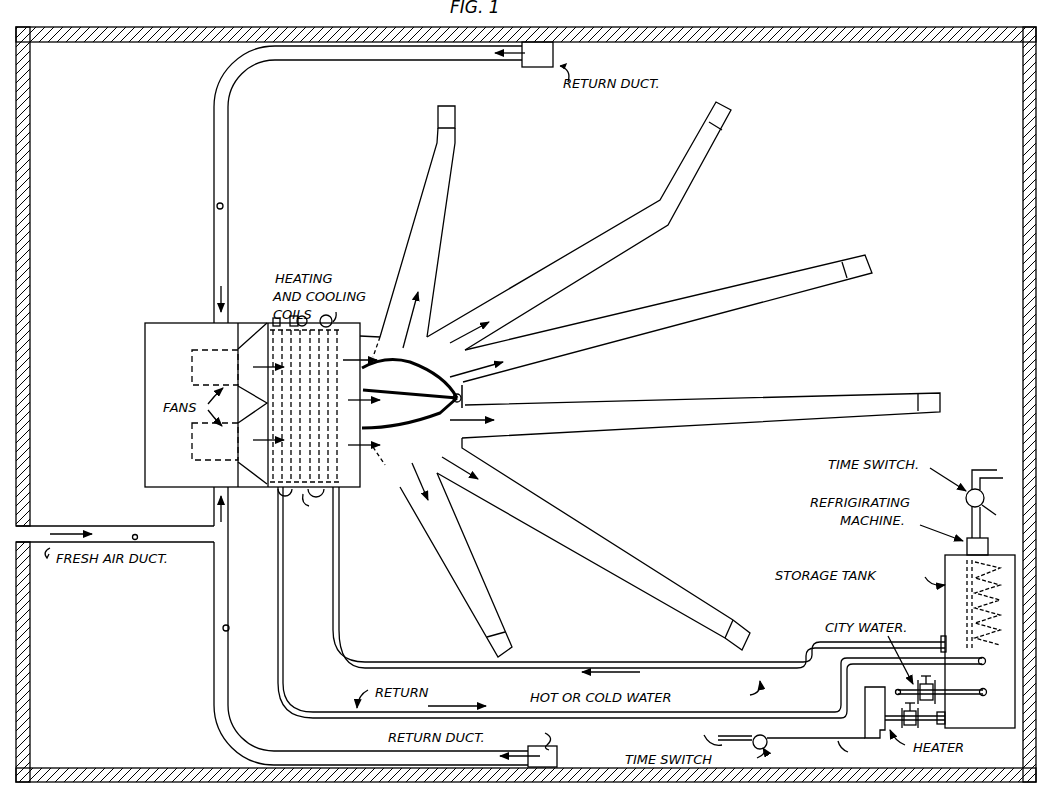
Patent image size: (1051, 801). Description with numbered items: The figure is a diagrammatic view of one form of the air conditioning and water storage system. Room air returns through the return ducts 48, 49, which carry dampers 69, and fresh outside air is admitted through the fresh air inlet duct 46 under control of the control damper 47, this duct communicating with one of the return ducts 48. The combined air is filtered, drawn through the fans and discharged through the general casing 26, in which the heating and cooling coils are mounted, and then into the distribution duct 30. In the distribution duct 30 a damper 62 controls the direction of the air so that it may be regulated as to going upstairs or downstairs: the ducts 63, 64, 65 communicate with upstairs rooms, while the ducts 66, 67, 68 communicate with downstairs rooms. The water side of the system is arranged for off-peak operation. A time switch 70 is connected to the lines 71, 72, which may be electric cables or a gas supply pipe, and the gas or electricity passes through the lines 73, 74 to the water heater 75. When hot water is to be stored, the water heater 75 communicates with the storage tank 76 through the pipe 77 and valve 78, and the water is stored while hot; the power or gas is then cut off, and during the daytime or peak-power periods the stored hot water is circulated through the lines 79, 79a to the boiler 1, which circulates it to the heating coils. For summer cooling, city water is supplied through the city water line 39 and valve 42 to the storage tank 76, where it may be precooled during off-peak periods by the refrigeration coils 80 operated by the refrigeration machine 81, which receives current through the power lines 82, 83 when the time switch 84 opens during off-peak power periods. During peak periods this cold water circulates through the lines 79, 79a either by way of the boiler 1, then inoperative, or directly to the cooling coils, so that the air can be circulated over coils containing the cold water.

The boiler 1 is at (311, 507).
The casing 26 is at (353, 413).
The distribution duct 30 is at (380, 470).
The city water main 39 is at (905, 689).
The valve 42 is at (937, 691).
The fresh air inlet duct 46 is at (100, 526).
The control damper 47 is at (136, 535).
The return duct 48 is at (218, 593).
The return duct 49 is at (214, 246).
The damper 62 is at (400, 391).
The duct 63 is at (477, 590).
The duct 64 is at (575, 528).
The duct 65 is at (657, 407).
The duct 66 is at (655, 312).
The duct 67 is at (565, 258).
The duct 68 is at (418, 223).
The dampers 69 is at (218, 205).
The time switch 70 is at (753, 735).
The line 71 is at (738, 735).
The line 72 is at (702, 734).
The line 73 is at (847, 753).
The line 74 is at (810, 737).
The water heater 75 is at (866, 721).
The storage tank 76 is at (1008, 728).
The pipe 77 is at (938, 718).
The valve 78 is at (908, 724).
The line 79 is at (785, 661).
The line 79a is at (803, 711).
The refrigeration coils 80 is at (966, 600).
The refrigeration machine 81 is at (989, 546).
The power line 82 is at (996, 468).
The power line 83 is at (990, 513).
The time switch 84 is at (998, 516).